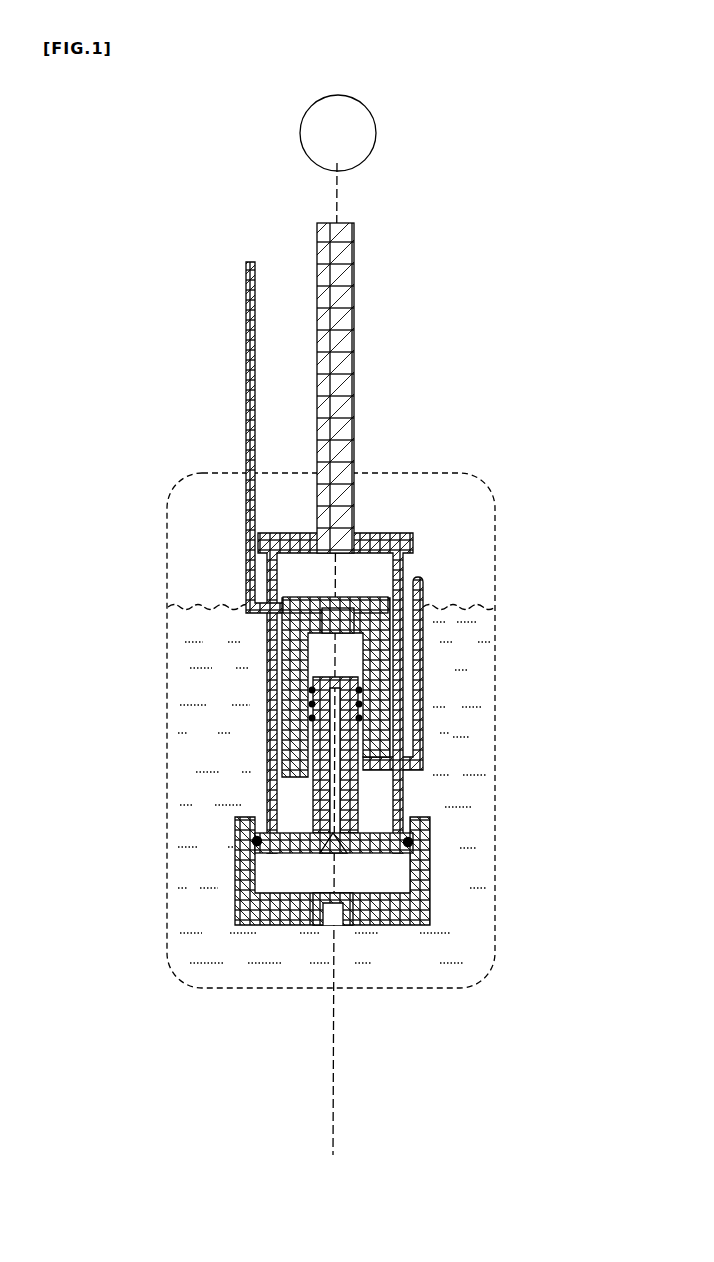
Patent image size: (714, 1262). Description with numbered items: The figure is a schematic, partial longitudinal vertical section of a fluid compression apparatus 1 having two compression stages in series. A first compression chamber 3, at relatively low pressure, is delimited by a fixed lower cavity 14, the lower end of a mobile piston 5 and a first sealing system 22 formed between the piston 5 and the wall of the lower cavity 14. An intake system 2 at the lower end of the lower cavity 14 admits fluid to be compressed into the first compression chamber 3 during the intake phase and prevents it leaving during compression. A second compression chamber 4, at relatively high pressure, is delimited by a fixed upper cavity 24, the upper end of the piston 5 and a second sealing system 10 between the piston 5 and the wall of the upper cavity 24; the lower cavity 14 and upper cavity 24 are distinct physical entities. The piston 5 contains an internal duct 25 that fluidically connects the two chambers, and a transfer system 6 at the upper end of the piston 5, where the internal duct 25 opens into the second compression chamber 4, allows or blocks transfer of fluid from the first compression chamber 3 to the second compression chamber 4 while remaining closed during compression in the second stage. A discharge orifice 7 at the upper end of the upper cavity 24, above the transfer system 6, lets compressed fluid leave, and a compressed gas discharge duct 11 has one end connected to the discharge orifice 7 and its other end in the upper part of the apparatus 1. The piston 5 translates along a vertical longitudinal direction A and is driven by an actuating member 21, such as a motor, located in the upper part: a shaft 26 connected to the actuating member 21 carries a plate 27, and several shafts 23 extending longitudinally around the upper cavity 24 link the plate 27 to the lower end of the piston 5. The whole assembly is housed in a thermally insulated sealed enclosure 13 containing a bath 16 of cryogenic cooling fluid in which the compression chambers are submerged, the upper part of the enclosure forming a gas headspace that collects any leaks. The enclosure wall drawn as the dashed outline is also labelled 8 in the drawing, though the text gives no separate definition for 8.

The fluid compression apparatus 1 is at (598, 580).
The intake system 2 is at (337, 922).
The first compression chamber 3 is at (383, 878).
The second compression chamber 4 is at (322, 663).
The piston 5 is at (300, 845).
The transfer system 6 is at (347, 666).
The discharge orifice 7 is at (334, 592).
The container 8 is at (463, 750).
The second sealing system 10 is at (363, 694).
The compressed gas discharge duct 11 is at (245, 384).
The thermally insulated sealed enclosure 13 is at (370, 498).
The lower cavity 14 is at (430, 877).
The bath of cryogenic cooling fluid 16 is at (205, 867).
The actuating member 21 is at (356, 141).
The first sealing system 22 is at (408, 838).
The shaft 23 is at (405, 563).
The upper cavity 24 is at (310, 634).
The internal duct 25 is at (322, 797).
The shaft 26 is at (342, 308).
The plate 27 is at (385, 527).
The longitudinal direction A is at (333, 1134).